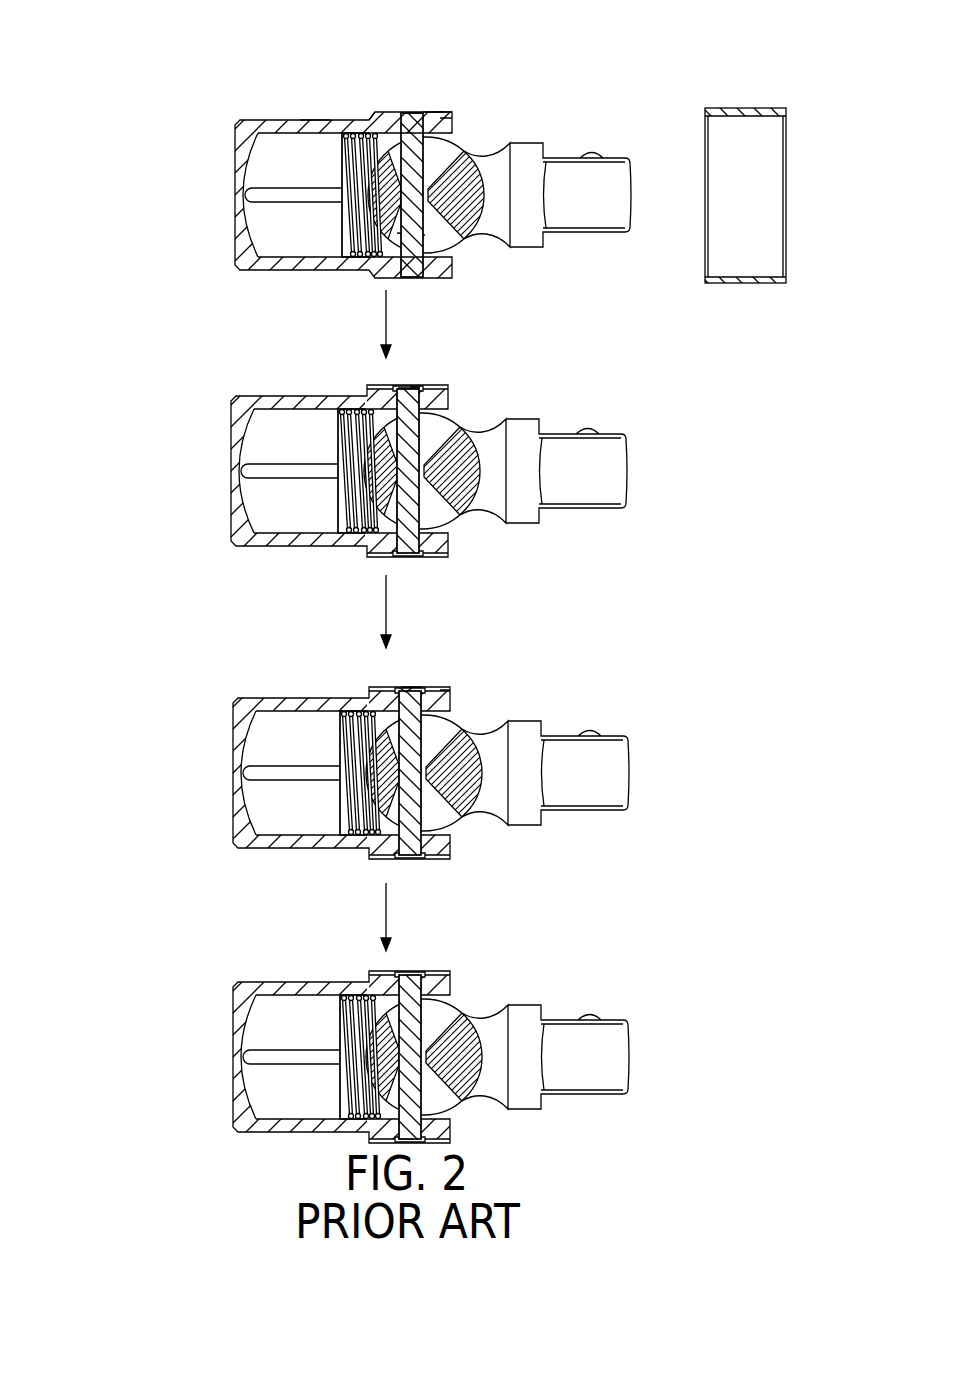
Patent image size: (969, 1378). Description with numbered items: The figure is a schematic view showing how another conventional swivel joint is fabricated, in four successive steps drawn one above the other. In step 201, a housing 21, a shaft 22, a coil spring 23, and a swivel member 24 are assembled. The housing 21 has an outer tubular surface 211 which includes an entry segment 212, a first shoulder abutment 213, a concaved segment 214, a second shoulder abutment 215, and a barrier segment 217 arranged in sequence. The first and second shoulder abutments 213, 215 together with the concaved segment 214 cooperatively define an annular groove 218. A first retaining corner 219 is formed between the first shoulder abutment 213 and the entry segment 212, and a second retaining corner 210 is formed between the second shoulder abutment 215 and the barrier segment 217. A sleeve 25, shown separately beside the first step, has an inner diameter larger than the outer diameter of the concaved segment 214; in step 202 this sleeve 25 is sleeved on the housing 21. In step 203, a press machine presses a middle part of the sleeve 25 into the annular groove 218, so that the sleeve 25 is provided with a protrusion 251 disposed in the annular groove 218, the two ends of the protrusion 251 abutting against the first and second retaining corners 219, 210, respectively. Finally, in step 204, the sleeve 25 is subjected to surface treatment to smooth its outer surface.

The housing 21 is at (261, 97).
The shaft 22 is at (432, 236).
The coil spring 23 is at (350, 170).
The swivel member 24 is at (562, 146).
The sleeve 25 is at (748, 111).
The step 201 is at (353, 146).
The step 202 is at (204, 471).
The step 203 is at (204, 773).
The step 204 is at (204, 1058).
The second retaining corner 210 is at (390, 113).
The outer tubular surface 211 is at (316, 126).
The entry segment 212 is at (442, 112).
The first shoulder abutment 213 is at (428, 112).
The concaved segment 214 is at (414, 113).
The second shoulder abutment 215 is at (407, 115).
The barrier segment 217 is at (364, 100).
The annular groove 218 is at (450, 121).
The first retaining corner 219 is at (436, 112).
The protrusion 251 is at (406, 688).